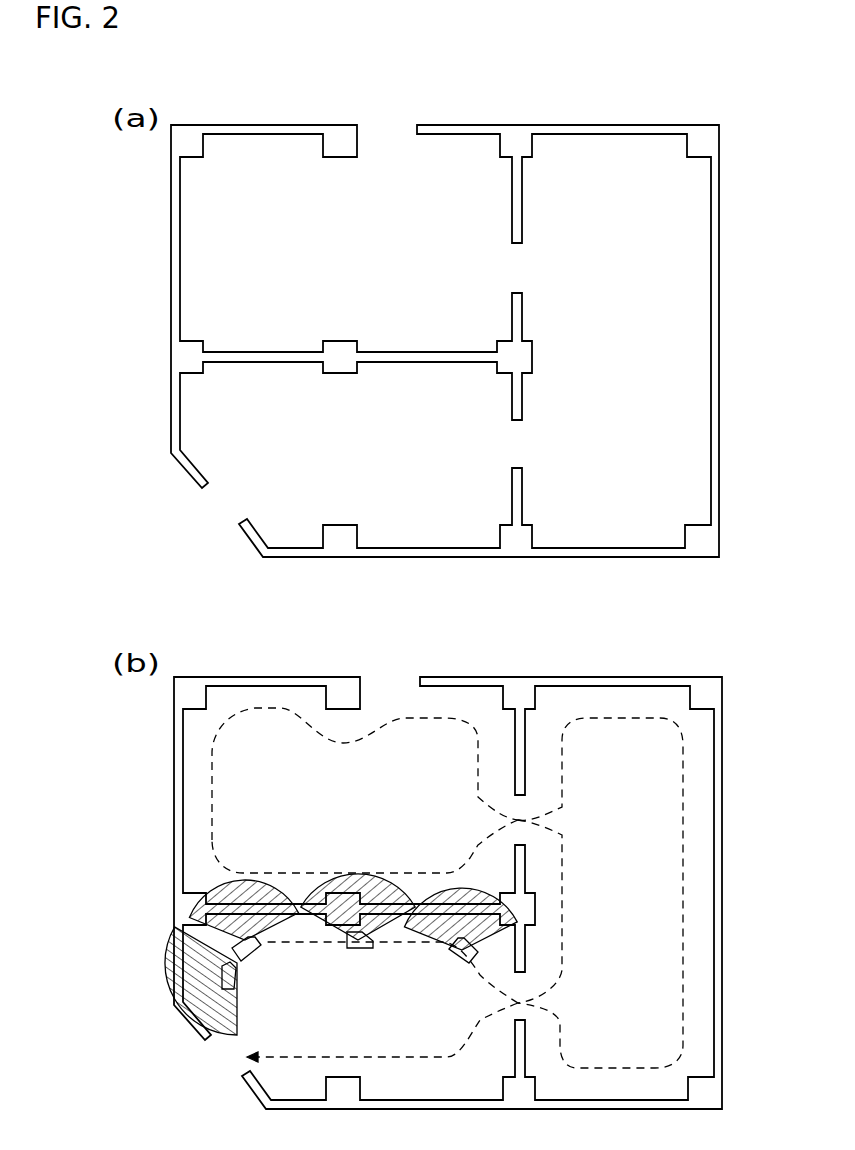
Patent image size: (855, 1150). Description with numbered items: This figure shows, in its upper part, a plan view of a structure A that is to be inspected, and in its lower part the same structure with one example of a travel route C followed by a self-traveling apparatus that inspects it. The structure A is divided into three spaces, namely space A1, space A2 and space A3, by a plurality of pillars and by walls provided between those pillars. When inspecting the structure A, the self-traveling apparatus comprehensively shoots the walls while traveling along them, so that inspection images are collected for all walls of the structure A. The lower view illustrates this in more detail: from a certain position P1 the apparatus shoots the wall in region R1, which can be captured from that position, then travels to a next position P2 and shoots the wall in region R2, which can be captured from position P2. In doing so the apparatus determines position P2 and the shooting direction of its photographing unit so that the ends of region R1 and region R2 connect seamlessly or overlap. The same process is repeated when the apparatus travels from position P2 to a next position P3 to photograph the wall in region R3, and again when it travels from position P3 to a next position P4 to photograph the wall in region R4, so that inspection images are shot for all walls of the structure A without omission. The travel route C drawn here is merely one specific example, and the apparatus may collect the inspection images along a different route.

The structure A is at (656, 113).
The space A1 is at (207, 448).
The space A2 is at (208, 270).
The space A3 is at (680, 342).
The travel route C is at (688, 808).
The region R1 is at (190, 903).
The region R2 is at (168, 993).
The region R3 is at (350, 873).
The region R4 is at (473, 890).
The position P1 is at (240, 983).
The position P2 is at (263, 946).
The position P3 is at (358, 950).
The position P4 is at (458, 962).